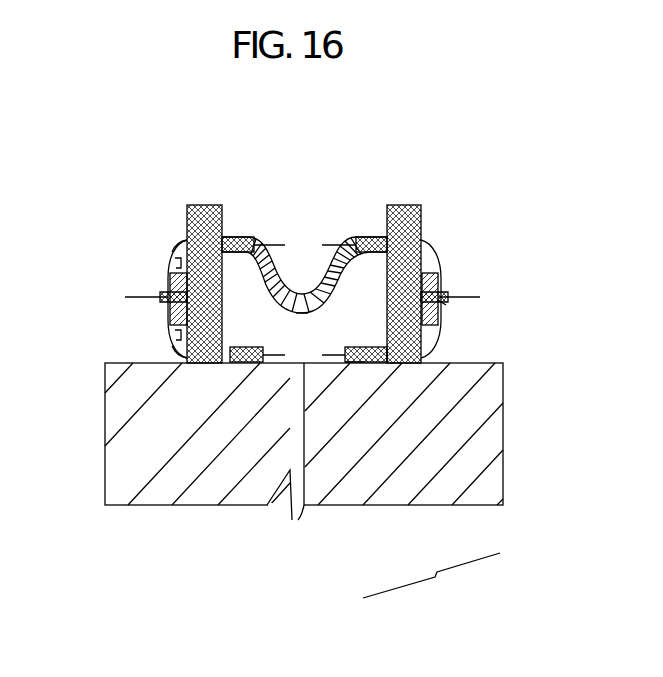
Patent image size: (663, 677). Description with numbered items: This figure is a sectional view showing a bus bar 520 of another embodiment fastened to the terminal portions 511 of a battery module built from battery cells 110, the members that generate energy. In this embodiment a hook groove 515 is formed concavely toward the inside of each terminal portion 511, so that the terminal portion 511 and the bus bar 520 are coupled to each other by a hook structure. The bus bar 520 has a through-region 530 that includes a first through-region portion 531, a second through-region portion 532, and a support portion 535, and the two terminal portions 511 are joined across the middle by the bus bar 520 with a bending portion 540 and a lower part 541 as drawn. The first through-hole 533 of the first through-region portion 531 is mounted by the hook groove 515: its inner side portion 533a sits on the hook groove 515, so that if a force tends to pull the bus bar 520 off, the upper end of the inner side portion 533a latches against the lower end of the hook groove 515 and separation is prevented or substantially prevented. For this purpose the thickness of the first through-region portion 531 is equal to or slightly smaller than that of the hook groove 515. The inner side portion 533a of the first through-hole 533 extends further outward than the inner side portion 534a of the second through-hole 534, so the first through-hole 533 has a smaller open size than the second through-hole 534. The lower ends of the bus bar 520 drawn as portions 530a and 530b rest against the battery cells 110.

The battery cell 110 is at (128, 447).
The bus bar 520 is at (154, 224).
The terminal portion 511 is at (416, 196).
The flexible membrane 540 is at (266, 239).
The first through-hole 533 is at (175, 258).
The inner side portion of the first through-hole 533a is at (187, 239).
The second through-hole 534 is at (175, 338).
The inner side portion of the second through-hole 534a is at (187, 358).
The hook groove 515 is at (421, 240).
The first bottom pad 530a is at (250, 370).
The bottom of membrane 541 is at (301, 315).
The second through-region portion 532 is at (372, 363).
The pad lower surface 530b is at (356, 372).
The first through-region portion 531 is at (400, 364).
The support portion 535 is at (444, 309).
The through-region 530 is at (431, 584).